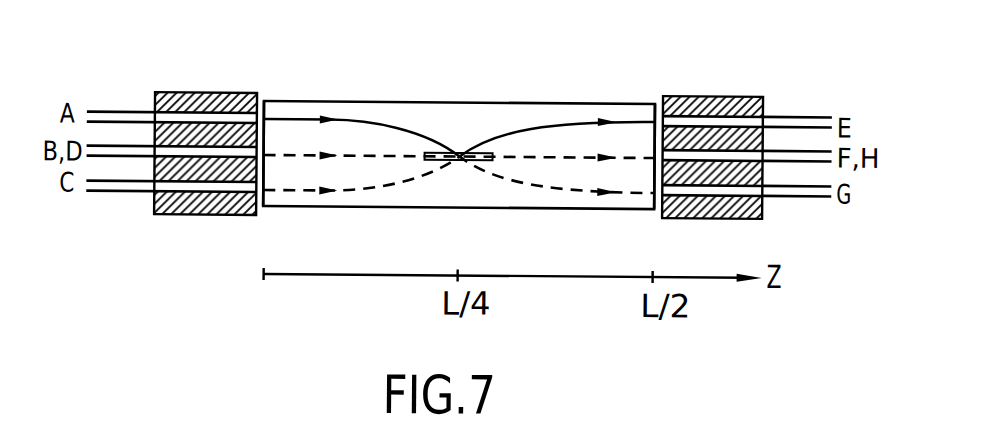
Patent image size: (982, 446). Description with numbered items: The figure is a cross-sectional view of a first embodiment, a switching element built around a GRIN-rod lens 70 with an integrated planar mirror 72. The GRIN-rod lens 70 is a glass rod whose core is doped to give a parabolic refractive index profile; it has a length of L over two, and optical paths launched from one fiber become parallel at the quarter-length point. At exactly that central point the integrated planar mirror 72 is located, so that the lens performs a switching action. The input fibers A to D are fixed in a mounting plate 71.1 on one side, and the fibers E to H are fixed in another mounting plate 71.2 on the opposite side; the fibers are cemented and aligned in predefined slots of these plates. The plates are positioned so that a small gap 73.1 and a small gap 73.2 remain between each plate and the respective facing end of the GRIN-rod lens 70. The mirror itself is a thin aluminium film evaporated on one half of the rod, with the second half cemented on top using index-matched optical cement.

The GRIN-rod lens 70 is at (392, 117).
The mounting plate 71.1 is at (207, 92).
The mounting plate 71.2 is at (728, 99).
The integrated planar mirror 72 is at (487, 152).
The gap 73.1 is at (260, 205).
The gap 73.2 is at (658, 210).